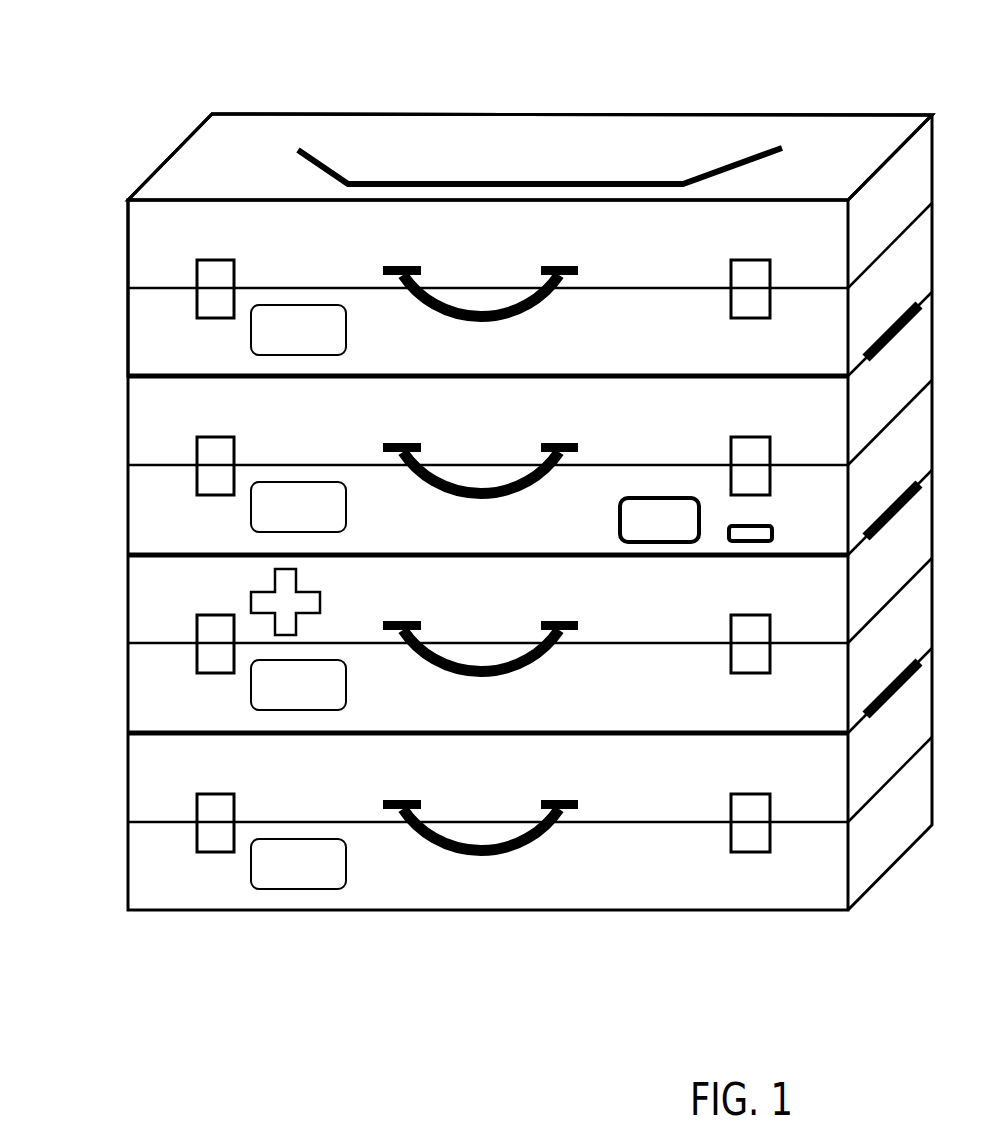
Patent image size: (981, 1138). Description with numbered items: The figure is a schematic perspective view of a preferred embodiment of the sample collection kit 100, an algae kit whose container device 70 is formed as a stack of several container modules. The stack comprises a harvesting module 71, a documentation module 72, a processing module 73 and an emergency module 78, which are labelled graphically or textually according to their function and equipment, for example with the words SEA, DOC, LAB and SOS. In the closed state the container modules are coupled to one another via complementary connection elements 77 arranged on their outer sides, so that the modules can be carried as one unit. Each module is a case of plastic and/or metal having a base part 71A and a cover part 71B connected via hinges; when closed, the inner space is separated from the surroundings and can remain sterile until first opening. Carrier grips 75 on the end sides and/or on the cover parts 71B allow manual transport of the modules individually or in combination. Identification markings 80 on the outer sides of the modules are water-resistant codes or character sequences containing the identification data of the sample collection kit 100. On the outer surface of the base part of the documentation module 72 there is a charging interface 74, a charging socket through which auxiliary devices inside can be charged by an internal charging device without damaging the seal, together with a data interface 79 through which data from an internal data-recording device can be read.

The sample collection kit 100 is at (757, 86).
The container device 70 is at (455, 114).
The harvesting module 71 is at (499, 367).
The base part 71A is at (128, 327).
The cover part 71B is at (172, 153).
The documentation module 72 is at (500, 548).
The processing module 73 is at (500, 903).
The charging interface 74 is at (672, 507).
The carrier grips 75 is at (427, 183).
The connection elements 77 is at (868, 351).
The emergency module 78 is at (500, 725).
The data interface 79 is at (760, 527).
The identification markings 80 is at (297, 317).